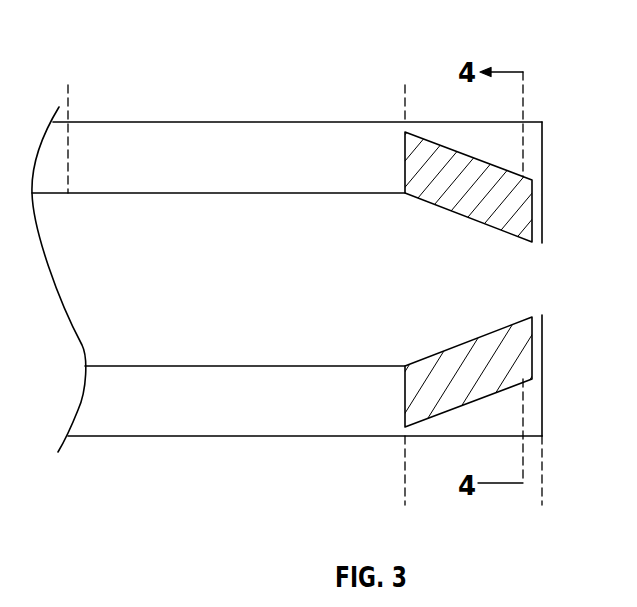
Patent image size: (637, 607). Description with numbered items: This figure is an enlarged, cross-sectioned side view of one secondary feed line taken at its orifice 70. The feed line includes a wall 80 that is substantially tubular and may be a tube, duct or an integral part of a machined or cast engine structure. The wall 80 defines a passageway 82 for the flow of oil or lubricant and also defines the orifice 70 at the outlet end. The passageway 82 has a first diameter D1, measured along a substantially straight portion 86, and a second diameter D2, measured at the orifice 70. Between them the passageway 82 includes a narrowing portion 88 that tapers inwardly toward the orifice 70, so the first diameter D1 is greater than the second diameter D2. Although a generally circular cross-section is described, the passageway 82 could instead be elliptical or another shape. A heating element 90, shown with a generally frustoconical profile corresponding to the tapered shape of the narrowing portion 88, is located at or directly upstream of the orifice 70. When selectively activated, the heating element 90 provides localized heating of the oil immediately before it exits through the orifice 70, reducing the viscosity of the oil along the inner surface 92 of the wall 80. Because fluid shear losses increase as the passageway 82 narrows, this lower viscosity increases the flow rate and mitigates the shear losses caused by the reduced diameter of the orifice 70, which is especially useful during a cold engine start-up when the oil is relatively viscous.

The orifice 70 is at (542, 243).
The wall 80 is at (224, 171).
The passageway 82 is at (224, 292).
The substantially straight portion 86 is at (405, 85).
The narrowing portion 88 is at (542, 505).
The heating element 90 is at (439, 127).
The inner surface 92 is at (453, 340).
The first diameter D1 is at (315, 193).
The second diameter D2 is at (532, 243).